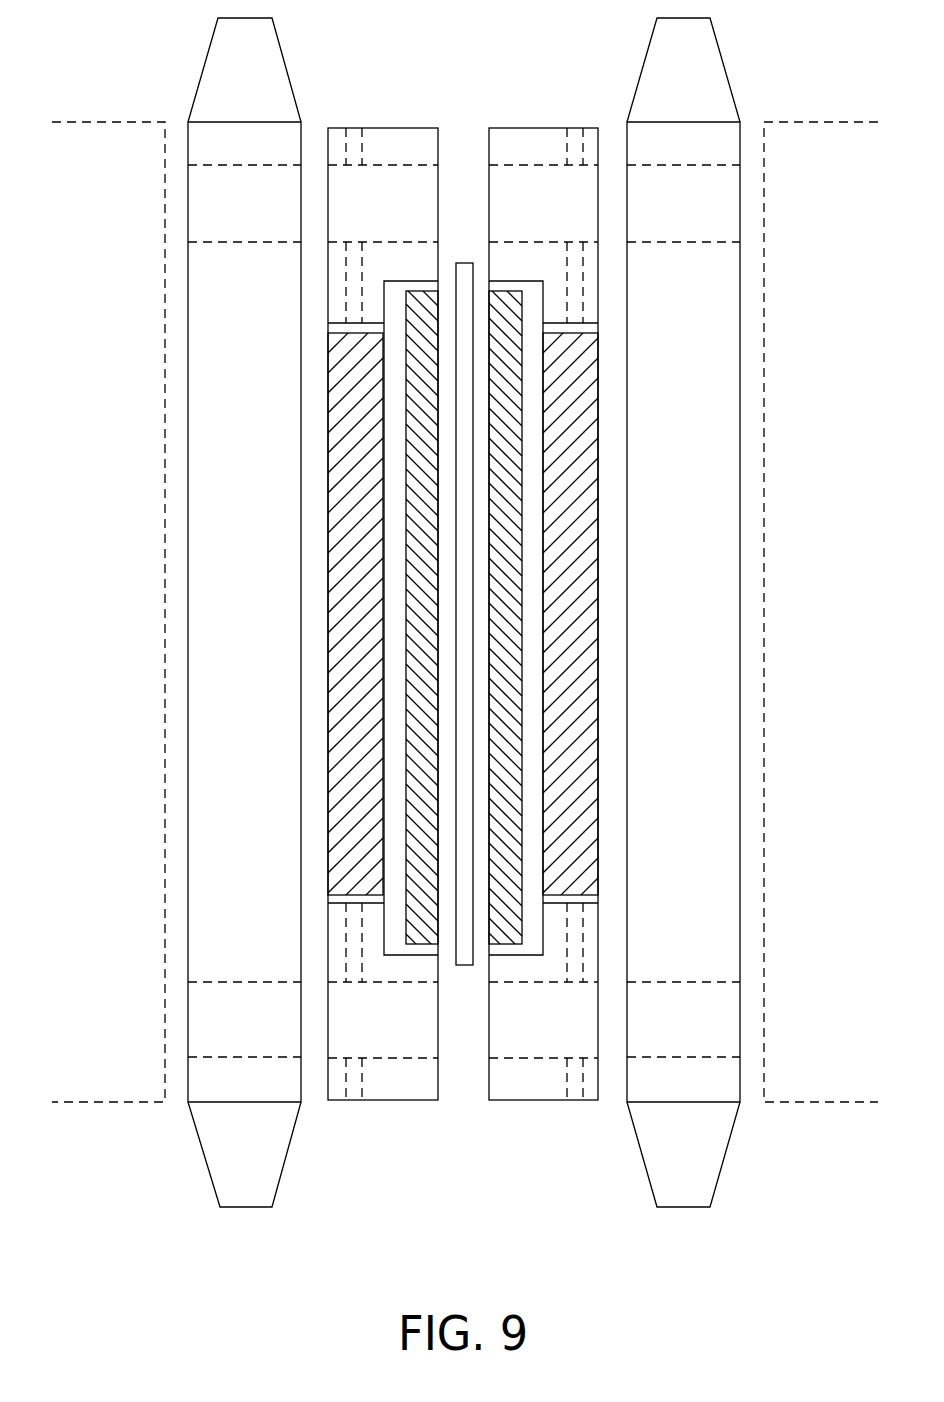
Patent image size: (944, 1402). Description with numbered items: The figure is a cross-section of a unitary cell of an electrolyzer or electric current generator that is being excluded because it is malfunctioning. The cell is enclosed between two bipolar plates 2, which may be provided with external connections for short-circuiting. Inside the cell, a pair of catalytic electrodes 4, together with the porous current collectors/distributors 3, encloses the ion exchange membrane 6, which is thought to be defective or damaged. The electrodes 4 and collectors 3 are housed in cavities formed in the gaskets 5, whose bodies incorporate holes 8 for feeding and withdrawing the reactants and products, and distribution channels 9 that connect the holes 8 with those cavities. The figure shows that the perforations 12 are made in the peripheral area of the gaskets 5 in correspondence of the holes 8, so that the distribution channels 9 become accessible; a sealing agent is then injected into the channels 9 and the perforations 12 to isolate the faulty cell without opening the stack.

The bipolar plate 2 is at (217, 565).
The current collector/distributor 3 is at (342, 563).
The catalytic electrode 4 is at (417, 608).
The gasket 5 is at (412, 150).
The ion exchange membrane 6 is at (467, 270).
The hole 8 is at (518, 175).
The distribution channel 9 is at (352, 262).
The perforation 12 is at (353, 150).